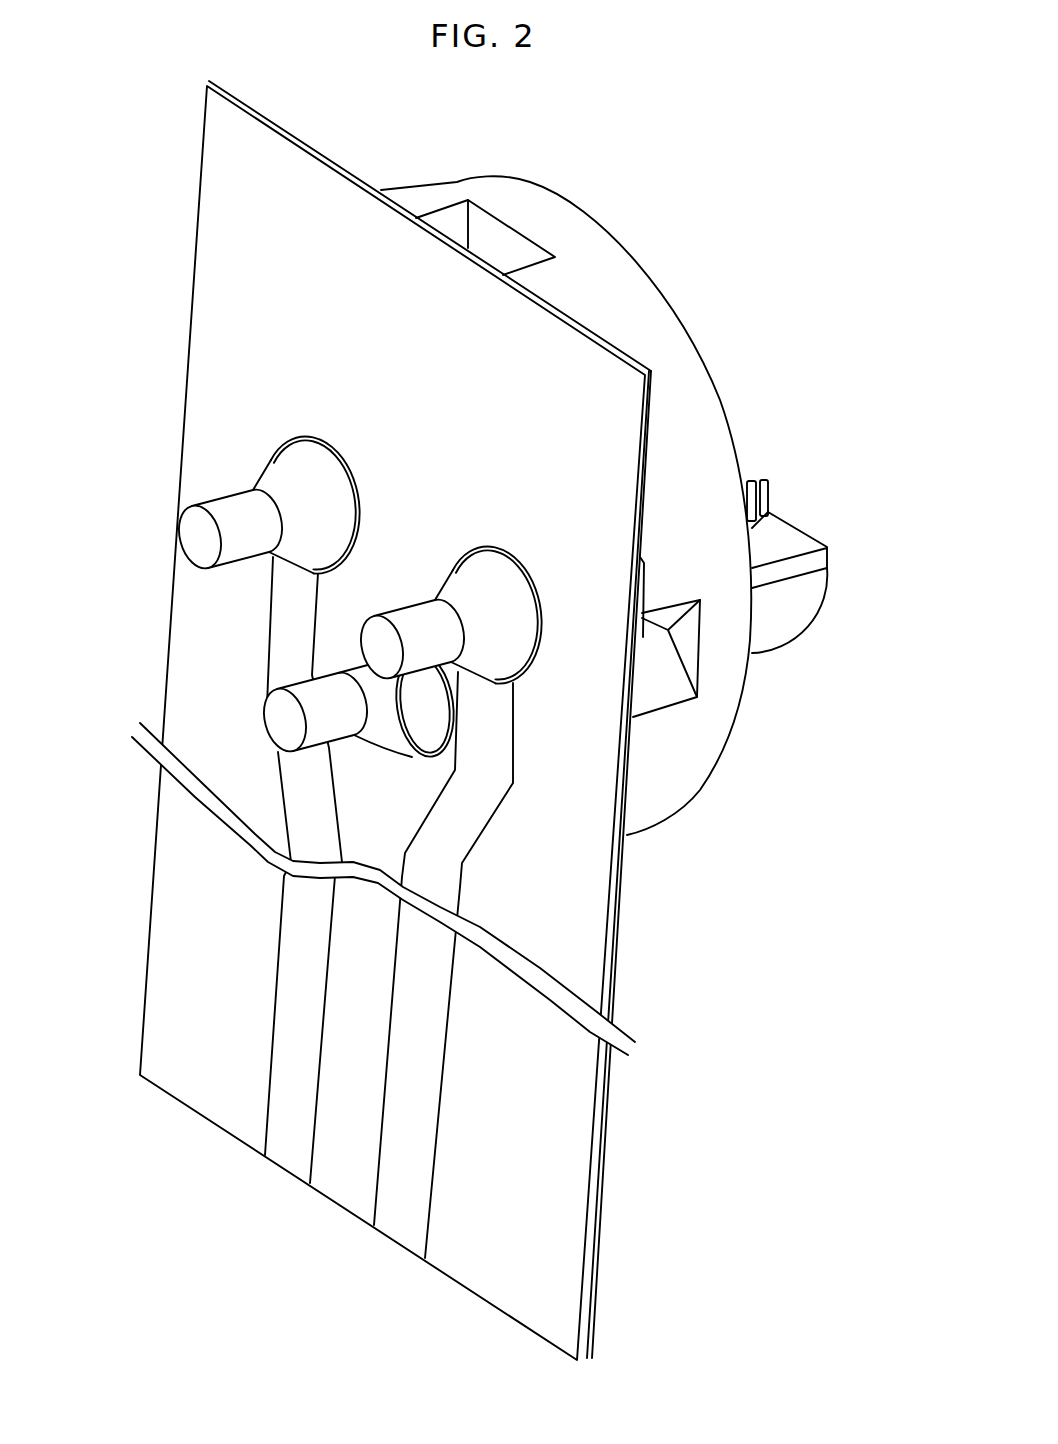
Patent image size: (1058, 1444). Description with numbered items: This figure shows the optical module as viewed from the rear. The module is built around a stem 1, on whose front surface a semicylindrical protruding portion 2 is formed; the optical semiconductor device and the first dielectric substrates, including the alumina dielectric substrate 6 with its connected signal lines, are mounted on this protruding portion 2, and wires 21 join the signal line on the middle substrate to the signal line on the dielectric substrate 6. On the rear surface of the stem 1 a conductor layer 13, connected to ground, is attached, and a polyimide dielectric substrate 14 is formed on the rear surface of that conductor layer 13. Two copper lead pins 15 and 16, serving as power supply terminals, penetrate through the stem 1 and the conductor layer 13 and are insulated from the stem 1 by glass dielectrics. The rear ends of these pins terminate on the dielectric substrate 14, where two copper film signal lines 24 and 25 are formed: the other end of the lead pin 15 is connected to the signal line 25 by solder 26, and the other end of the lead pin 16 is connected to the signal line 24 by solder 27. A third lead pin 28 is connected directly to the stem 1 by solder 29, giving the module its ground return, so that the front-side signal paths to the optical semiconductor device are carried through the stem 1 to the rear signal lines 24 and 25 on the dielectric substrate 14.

The stem 1 is at (572, 280).
The protruding portion 2 is at (770, 627).
The dielectric substrate 6 is at (790, 570).
The conductor layer 13 is at (603, 1217).
The dielectric substrate 14 is at (165, 1040).
The lead pin 15 is at (197, 543).
The lead pin 16 is at (438, 740).
The wires 21 is at (772, 488).
The signal line 24 is at (392, 1193).
The signal line 25 is at (282, 1122).
The solder 26 is at (302, 475).
The solder 27 is at (508, 618).
The lead pin 28 is at (272, 717).
The solder 29 is at (405, 740).